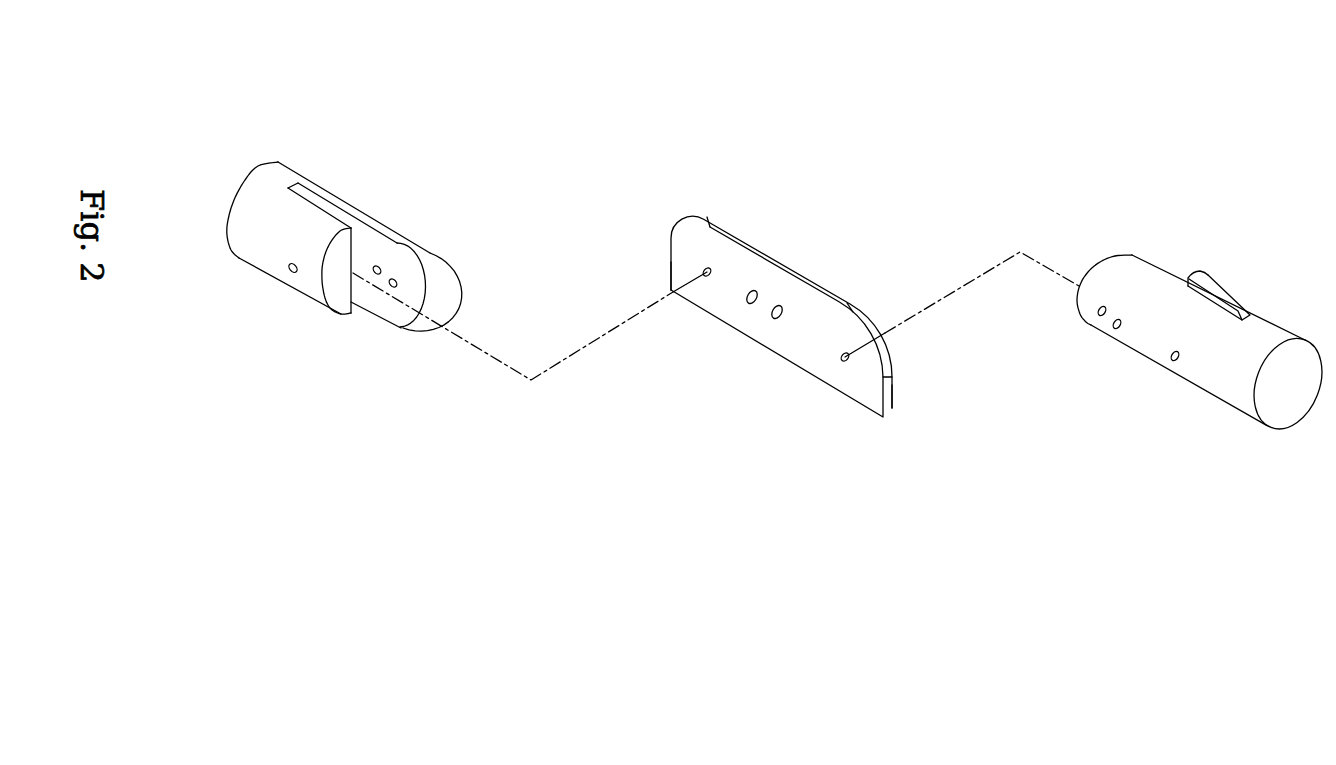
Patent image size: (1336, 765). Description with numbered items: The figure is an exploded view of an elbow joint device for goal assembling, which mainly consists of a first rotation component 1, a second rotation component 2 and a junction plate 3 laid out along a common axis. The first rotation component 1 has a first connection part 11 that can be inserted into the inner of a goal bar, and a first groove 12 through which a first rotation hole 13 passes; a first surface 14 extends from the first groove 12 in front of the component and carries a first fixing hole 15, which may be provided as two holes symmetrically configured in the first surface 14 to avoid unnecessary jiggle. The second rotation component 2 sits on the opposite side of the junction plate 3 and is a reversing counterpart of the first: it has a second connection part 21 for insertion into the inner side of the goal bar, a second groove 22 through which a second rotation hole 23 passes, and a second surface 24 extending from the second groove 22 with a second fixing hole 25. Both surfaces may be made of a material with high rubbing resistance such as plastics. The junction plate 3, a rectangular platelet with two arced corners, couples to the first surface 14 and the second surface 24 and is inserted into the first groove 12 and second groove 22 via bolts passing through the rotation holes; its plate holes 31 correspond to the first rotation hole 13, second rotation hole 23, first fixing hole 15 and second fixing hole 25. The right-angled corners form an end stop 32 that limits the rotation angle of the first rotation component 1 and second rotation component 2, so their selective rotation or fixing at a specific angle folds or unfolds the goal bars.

The first rotation component 1 is at (347, 217).
The first connection part 11 is at (256, 190).
The first groove 12 is at (325, 208).
The first rotation hole 13 is at (290, 274).
The first surface 14 is at (386, 307).
The first fixing hole 15 is at (394, 283).
The junction plate 3 is at (777, 316).
The plate holes 31 is at (843, 358).
The end stop 32 is at (674, 292).
The second rotation component 2 is at (1188, 334).
The second connection part 21 is at (1253, 432).
The second groove 22 is at (1208, 297).
The second rotation hole 23 is at (1172, 360).
The second surface 24 is at (1165, 273).
The second fixing hole 25 is at (1102, 314).